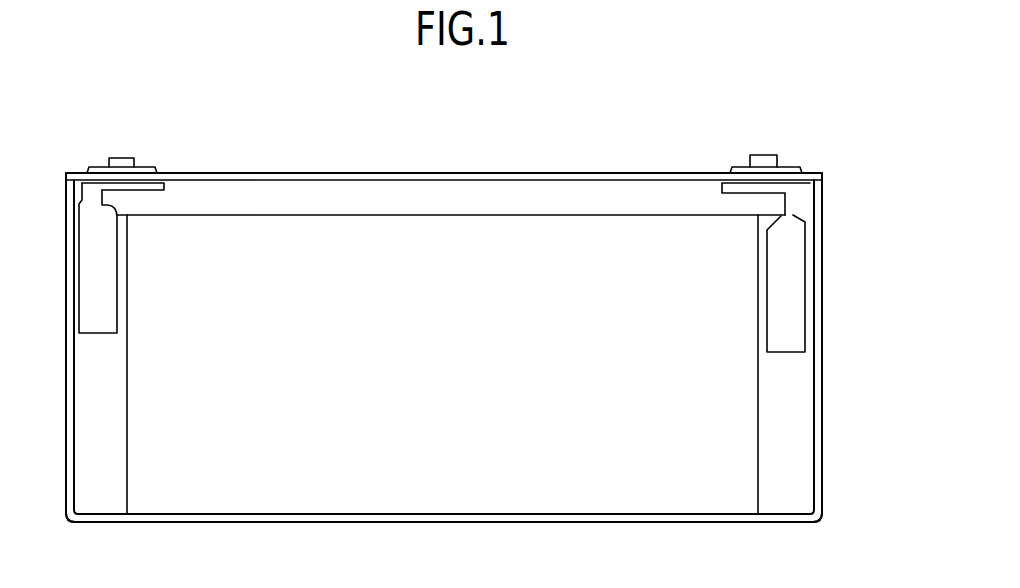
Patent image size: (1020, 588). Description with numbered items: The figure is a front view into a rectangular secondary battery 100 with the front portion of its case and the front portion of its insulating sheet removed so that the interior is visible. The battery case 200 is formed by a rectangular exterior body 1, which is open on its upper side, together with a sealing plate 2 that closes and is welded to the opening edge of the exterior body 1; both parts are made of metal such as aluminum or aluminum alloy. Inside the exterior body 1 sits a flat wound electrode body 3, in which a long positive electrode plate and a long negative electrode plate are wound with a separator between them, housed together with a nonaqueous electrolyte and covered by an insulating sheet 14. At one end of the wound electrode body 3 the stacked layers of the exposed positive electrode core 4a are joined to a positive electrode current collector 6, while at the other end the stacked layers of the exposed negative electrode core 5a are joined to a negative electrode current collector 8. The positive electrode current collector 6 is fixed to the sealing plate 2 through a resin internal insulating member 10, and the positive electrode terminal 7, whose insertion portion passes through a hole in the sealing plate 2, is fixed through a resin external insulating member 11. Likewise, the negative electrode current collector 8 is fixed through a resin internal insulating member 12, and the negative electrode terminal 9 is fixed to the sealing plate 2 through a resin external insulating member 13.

The rectangular secondary battery 100 is at (80, 86).
The battery case 200 is at (826, 370).
The rectangular exterior body 1 is at (824, 412).
The sealing plate 2 is at (311, 173).
The wound electrode body 3 is at (453, 500).
The positive electrode core 4a is at (788, 500).
The negative electrode core 5a is at (92, 500).
The positive electrode current collector 6 is at (790, 262).
The positive electrode terminal 7 is at (764, 155).
The negative electrode current collector 8 is at (97, 280).
The negative electrode terminal 9 is at (118, 157).
The internal insulating member 10 is at (778, 184).
The external insulating member 11 is at (735, 167).
The internal insulating member 12 is at (163, 182).
The external insulating member 13 is at (152, 167).
The insulating sheet 14 is at (66, 462).